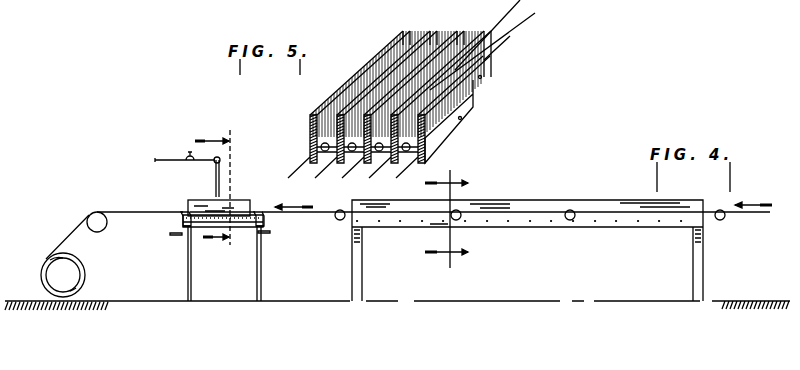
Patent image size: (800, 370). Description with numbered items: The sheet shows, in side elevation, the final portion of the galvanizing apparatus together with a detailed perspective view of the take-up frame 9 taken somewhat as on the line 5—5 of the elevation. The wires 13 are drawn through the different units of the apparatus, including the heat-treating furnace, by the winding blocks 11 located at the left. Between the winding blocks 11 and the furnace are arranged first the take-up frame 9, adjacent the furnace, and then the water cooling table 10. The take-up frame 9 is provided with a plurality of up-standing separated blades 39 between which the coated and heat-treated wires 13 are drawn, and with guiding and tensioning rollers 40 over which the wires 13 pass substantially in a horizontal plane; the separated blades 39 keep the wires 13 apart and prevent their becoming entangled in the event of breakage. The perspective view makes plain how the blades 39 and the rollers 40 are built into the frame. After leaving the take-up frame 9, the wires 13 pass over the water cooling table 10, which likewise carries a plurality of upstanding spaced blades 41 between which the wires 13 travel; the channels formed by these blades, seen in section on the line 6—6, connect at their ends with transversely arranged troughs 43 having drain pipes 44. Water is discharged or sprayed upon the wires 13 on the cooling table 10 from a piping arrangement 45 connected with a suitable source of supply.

In FIG. 4, the section line 5— 5 is at (446, 218).
In FIG. 4, the section line 6— 6 is at (214, 187).
In FIG. 4, the take-up frame 9 is at (527, 250).
In FIG. 4, the water cooling table 10 is at (240, 278).
In FIG. 4, the winding blocks 11 is at (70, 272).
In FIG. 4, the wires 13 is at (408, 235).
In FIG. 5, the wires 13 is at (513, 44).
In FIG. 5, the up-standing separated blades 39 is at (465, 100).
In FIG. 4, the guiding and tensioning rollers 40 is at (574, 211).
In FIG. 5, the guiding and tensioning rollers 40 is at (406, 160).
In FIG. 4, the upstanding spaced blades 41 is at (212, 207).
In FIG. 4, the transversely arranged troughs 43 is at (259, 212).
In FIG. 4, the drain pipes 44 is at (270, 233).
In FIG. 4, the piping arrangement 45 is at (162, 160).